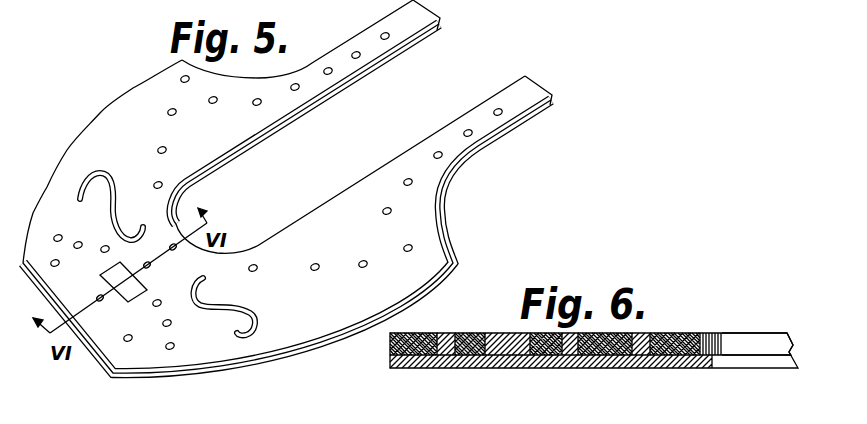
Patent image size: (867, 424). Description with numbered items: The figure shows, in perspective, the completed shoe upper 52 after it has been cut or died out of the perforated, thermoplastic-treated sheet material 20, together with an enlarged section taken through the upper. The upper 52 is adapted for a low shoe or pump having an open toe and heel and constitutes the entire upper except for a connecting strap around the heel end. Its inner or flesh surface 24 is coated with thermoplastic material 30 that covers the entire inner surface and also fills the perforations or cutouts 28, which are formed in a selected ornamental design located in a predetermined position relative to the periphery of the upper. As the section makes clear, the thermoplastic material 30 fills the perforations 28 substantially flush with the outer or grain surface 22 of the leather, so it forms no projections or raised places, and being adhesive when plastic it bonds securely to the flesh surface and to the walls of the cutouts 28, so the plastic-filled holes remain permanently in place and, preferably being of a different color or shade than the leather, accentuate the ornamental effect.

In FIG. 6, the sheet material 20 is at (390, 347).
In FIG. 5, the outer or grain surface 22 is at (432, 239).
In FIG. 6, the outer or grain surface 22 is at (677, 332).
In FIG. 6, the inner or flesh surface 24 is at (428, 357).
In FIG. 5, the perforations or cutouts 28 is at (315, 271).
In FIG. 6, the perforations or cutouts 28 is at (462, 337).
In FIG. 5, the thermoplastic material 30 is at (200, 369).
In FIG. 6, the thermoplastic material 30 is at (577, 368).
In FIG. 5, the shoe upper 52 is at (131, 88).
In FIG. 6, the shoe upper 52 is at (738, 335).